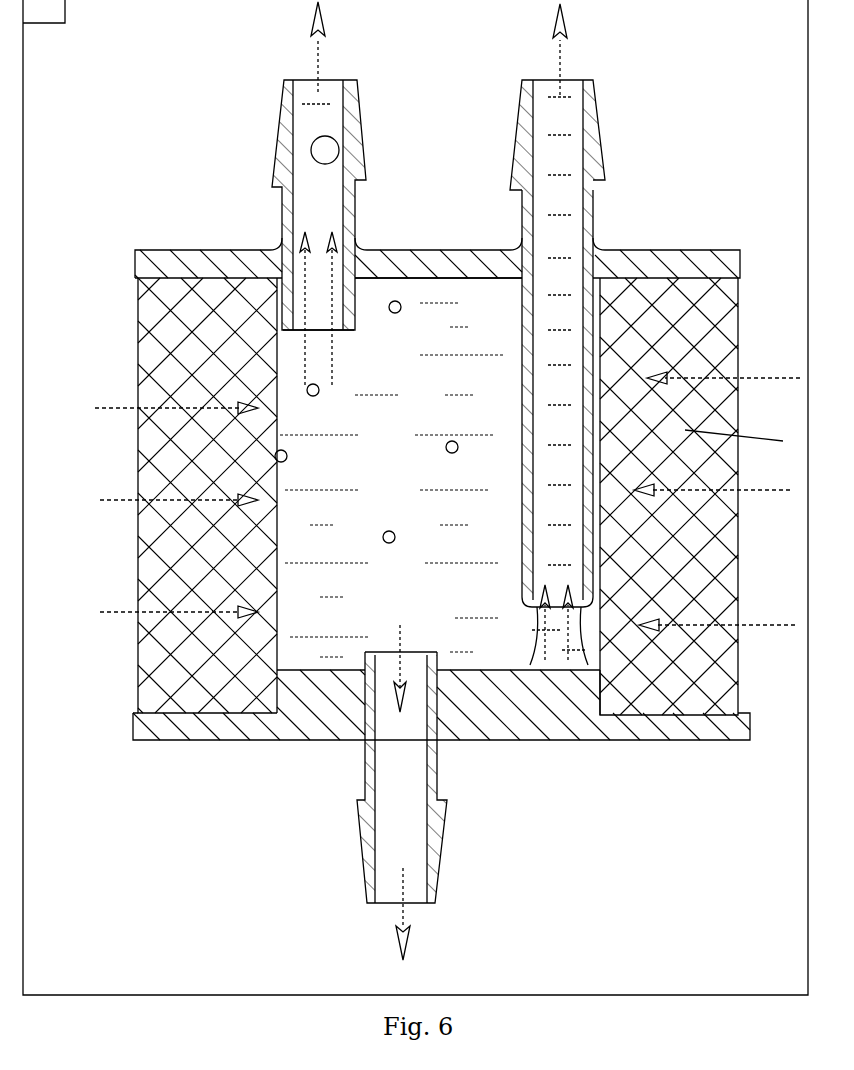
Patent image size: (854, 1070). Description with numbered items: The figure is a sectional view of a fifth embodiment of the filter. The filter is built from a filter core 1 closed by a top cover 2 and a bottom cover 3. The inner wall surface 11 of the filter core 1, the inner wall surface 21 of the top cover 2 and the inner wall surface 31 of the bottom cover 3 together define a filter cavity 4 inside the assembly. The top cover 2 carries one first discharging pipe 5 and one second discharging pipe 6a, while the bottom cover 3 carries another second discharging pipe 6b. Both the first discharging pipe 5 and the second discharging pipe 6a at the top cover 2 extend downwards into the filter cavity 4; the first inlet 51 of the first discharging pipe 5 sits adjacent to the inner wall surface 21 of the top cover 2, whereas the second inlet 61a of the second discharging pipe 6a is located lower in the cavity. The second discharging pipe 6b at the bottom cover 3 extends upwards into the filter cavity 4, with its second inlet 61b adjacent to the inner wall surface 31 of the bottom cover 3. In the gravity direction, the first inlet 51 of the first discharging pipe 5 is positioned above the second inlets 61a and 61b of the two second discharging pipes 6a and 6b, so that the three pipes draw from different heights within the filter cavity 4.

The filter core 1 is at (197, 687).
The inner wall surface of the filter core 11 is at (277, 640).
The top cover 2 is at (641, 266).
The inner wall surface of the top cover 21 is at (451, 276).
The bottom cover 3 is at (560, 718).
The inner wall surface of the bottom cover 31 is at (322, 672).
The filter cavity 4 is at (503, 655).
The first discharging pipe 5 is at (290, 100).
The first inlet 51 is at (338, 322).
The second discharging pipe 6a is at (593, 148).
The second inlet 61a is at (575, 607).
The second discharging pipe 6b is at (370, 842).
The second inlet 61b is at (392, 660).